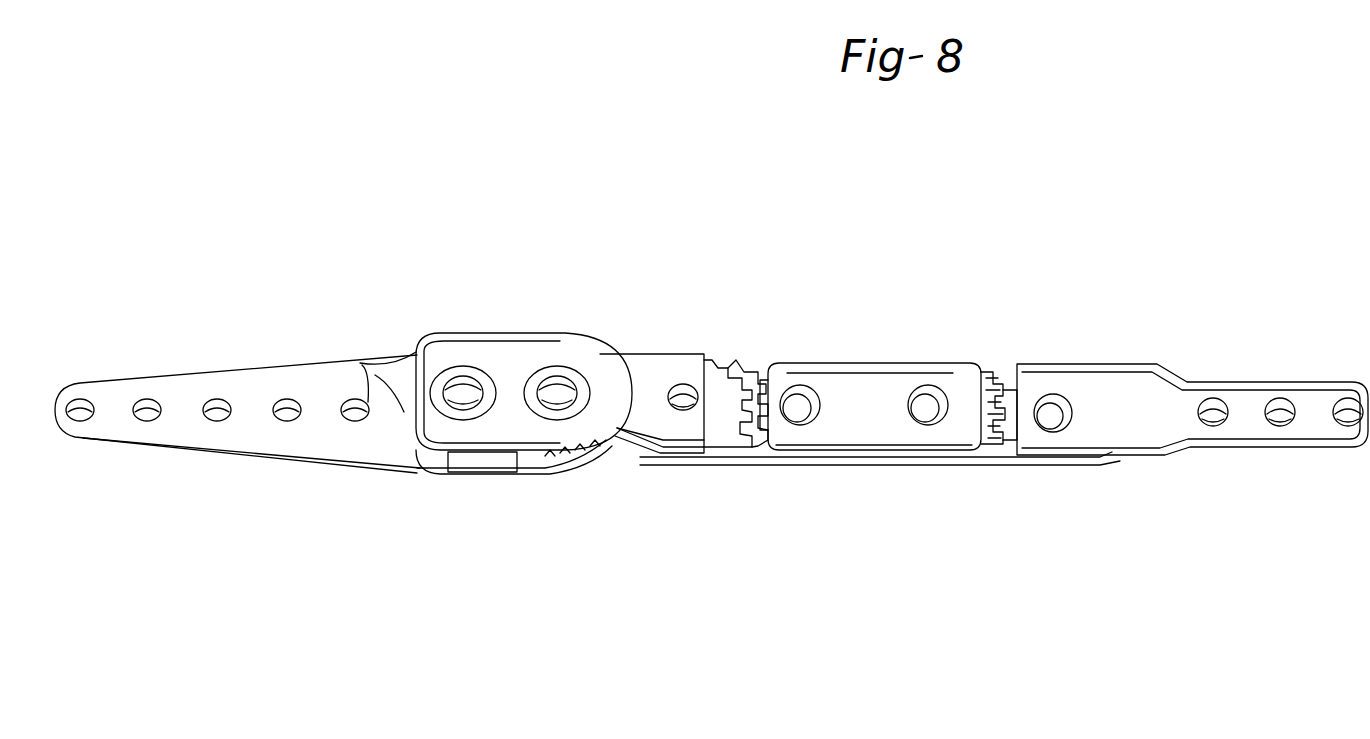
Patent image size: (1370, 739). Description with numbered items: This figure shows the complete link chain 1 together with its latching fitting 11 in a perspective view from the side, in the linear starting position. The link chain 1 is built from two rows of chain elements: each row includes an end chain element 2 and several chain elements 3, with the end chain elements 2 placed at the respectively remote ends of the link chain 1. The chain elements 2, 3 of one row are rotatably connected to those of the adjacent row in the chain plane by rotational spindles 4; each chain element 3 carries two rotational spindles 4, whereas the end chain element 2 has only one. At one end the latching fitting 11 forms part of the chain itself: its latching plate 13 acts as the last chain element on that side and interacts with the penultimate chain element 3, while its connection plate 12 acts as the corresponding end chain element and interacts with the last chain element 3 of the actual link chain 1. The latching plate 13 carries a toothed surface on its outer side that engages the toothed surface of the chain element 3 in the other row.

The link chain 1 is at (658, 200).
The end chain element 2 is at (1277, 363).
The chain element 3 is at (893, 345).
The rotational spindle 4 is at (680, 420).
The latching fitting 11 is at (442, 283).
The connection plate 12 is at (232, 473).
The latching plate 13 is at (637, 347).